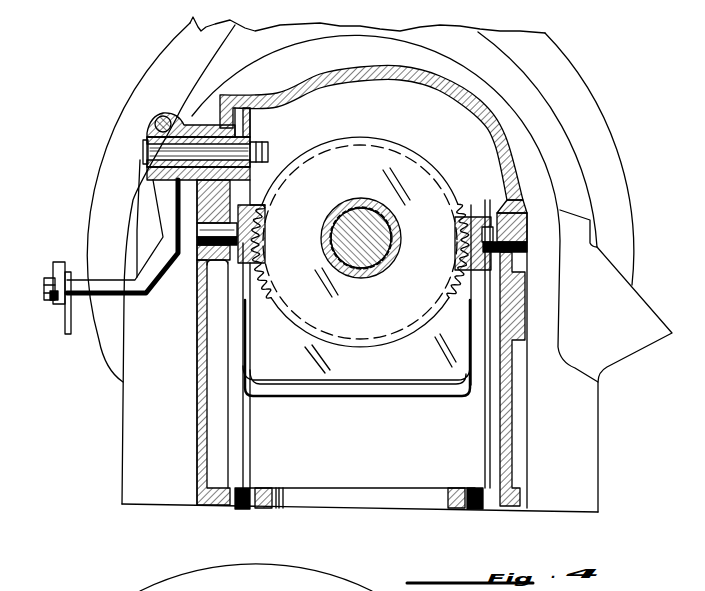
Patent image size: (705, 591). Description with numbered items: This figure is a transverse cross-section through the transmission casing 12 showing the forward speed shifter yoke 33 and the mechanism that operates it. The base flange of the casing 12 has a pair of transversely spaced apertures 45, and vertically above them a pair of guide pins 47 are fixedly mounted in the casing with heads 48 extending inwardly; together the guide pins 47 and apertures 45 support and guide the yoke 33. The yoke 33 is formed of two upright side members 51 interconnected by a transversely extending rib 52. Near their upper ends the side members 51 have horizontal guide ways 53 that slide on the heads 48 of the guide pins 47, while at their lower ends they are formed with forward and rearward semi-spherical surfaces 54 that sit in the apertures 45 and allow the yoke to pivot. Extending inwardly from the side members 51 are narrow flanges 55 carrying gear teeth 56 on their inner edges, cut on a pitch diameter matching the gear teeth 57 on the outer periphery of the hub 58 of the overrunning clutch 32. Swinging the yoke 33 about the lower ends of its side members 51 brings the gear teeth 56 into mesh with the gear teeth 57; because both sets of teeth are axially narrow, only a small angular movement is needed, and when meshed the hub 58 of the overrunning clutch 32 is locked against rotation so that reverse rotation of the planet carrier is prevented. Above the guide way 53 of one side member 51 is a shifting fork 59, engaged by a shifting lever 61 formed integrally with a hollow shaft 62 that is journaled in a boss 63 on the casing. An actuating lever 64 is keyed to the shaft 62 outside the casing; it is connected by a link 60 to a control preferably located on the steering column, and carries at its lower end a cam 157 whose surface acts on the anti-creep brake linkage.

The transmission casing 12 is at (478, 118).
The overrunning clutch 32 is at (353, 156).
The forward speed shifter yoke 33 is at (410, 405).
The apertures 45 is at (250, 480).
The guide pins 47 is at (198, 254).
The heads 48 is at (240, 252).
The side members 51 is at (247, 432).
The rib 52 is at (318, 392).
The guide ways 53 is at (250, 305).
The semi-spherical surfaces 54 is at (241, 510).
The flanges 55 is at (265, 222).
The gear teeth 56 is at (268, 243).
The gear teeth 57 is at (460, 215).
The hub 58 is at (420, 165).
The shifting fork 59 is at (272, 204).
The link 60 is at (50, 268).
The shifting lever 61 is at (266, 162).
The hollow shaft 62 is at (195, 125).
The boss 63 is at (186, 123).
The actuating lever 64 is at (163, 204).
The cam 157 is at (66, 318).